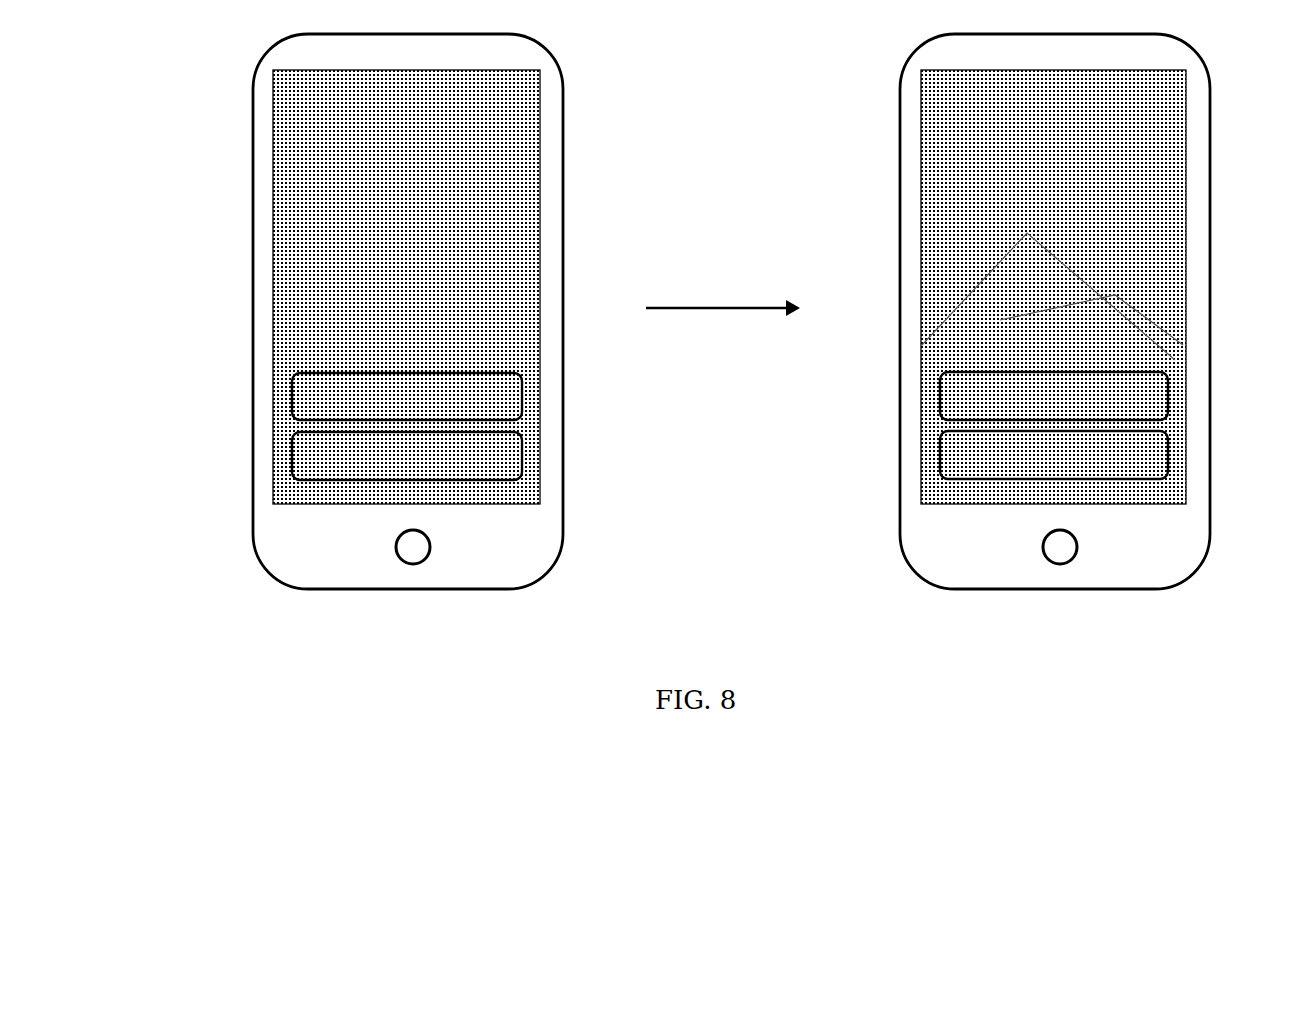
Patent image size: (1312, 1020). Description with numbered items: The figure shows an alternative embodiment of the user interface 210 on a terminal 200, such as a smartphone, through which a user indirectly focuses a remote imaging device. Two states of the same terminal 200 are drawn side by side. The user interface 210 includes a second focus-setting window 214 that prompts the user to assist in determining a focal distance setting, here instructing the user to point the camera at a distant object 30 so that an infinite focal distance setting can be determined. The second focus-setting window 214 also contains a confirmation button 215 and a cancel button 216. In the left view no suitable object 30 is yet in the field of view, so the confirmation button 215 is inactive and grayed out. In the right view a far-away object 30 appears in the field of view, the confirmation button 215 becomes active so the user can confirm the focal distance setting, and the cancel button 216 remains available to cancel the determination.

The terminal 200 is at (256, 90).
The user interface 210 is at (274, 170).
The second focus-setting window 214 is at (274, 268).
The confirmation button 215 is at (292, 395).
The cancel button 216 is at (292, 455).
The object 30 is at (1030, 240).